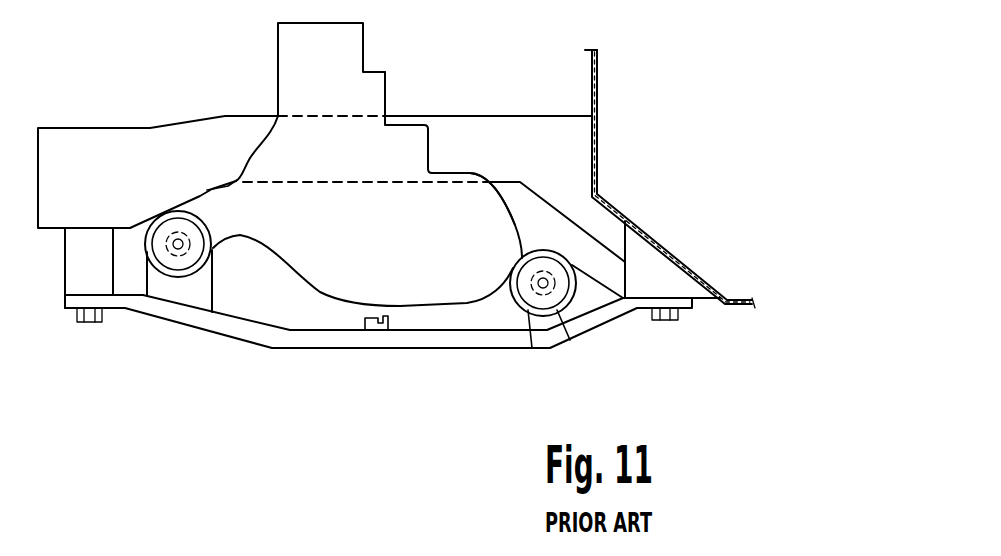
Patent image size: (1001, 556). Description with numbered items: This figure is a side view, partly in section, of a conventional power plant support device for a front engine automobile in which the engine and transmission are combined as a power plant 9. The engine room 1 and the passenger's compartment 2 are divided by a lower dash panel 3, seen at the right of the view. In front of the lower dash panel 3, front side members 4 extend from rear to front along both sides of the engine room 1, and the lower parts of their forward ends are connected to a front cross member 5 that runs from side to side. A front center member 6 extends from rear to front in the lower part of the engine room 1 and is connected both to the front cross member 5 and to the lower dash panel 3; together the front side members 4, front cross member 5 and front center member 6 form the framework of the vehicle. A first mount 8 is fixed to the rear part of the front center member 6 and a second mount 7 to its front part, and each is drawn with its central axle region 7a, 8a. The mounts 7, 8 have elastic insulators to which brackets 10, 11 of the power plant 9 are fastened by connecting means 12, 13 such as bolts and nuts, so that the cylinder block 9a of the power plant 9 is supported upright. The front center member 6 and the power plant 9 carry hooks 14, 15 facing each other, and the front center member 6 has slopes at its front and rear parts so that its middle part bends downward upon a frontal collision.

The engine room 1 is at (194, 68).
The passenger's compartment 2 is at (668, 142).
The lower dash panel 3 is at (598, 75).
The front side member 4 is at (80, 152).
The front cross member 5 is at (77, 267).
The front center member 6 is at (238, 338).
The second mount 7 is at (145, 280).
The front roller axle 7a is at (173, 265).
The first mount 8 is at (590, 303).
The rear roller axle 8a is at (560, 298).
The power plant 9 is at (472, 297).
The cylinder block 9a is at (353, 47).
The bracket 10 is at (235, 231).
The bracket 11 is at (495, 248).
The connecting means 12 is at (183, 250).
The connecting means 13 is at (541, 288).
The hook 14 is at (350, 332).
The hook 15 is at (392, 320).